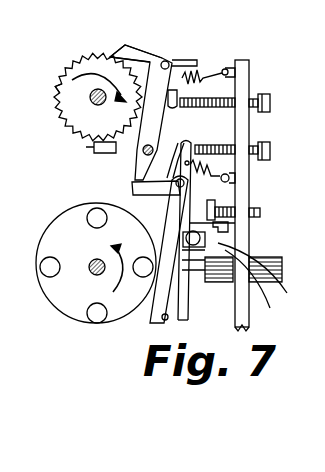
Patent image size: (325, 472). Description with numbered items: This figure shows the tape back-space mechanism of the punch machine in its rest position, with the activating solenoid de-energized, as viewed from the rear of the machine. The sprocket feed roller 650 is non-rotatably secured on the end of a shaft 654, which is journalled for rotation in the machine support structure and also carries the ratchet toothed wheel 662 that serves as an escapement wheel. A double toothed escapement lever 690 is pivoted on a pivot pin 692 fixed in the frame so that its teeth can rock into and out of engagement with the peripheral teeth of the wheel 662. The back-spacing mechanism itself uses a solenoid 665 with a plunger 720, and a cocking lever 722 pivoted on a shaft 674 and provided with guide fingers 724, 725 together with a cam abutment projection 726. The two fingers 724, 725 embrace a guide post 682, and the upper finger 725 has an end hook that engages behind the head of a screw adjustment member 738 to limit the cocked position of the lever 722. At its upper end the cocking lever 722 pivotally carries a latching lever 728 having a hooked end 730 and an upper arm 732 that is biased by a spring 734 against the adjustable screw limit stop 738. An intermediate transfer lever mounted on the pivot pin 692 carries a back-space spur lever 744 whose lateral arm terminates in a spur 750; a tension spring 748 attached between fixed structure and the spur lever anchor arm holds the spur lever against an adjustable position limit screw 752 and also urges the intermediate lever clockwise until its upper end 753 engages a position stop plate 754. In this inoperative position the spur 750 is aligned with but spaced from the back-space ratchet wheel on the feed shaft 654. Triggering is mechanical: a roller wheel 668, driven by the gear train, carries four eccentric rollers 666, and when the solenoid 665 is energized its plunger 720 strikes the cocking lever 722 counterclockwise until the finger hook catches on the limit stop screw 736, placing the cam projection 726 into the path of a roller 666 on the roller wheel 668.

The sprocket feed roller 650 is at (76, 63).
The shaft 654 is at (92, 97).
The ratchet toothed wheel 662 is at (68, 103).
The double toothed escapement lever 690 is at (94, 146).
The back-space spur lever 744 is at (138, 48).
The spur 750 is at (112, 53).
The upper end 753 is at (182, 59).
The position stop plate 754 is at (185, 62).
The tension spring 748 is at (205, 74).
The latching lever 728 is at (203, 128).
The adjustable position limit screw 752 is at (278, 82).
The upper arm 732 is at (196, 135).
The adjustable screw limit stop 738 is at (266, 146).
The pivot pin 692 is at (141, 153).
The hooked end 730 is at (132, 188).
The spring 734 is at (232, 176).
The limit stop screw 736 is at (232, 204).
The guide finger 725 is at (228, 227).
The solenoid 665 is at (268, 258).
The guide post 682 is at (280, 288).
The guide finger 724 is at (268, 307).
The plunger 720 is at (196, 284).
The cocking lever 722 is at (183, 312).
The cam abutment projection 726 is at (164, 222).
The shaft 674 is at (160, 322).
The roller wheel 668 is at (55, 236).
The roller 666 is at (141, 276).